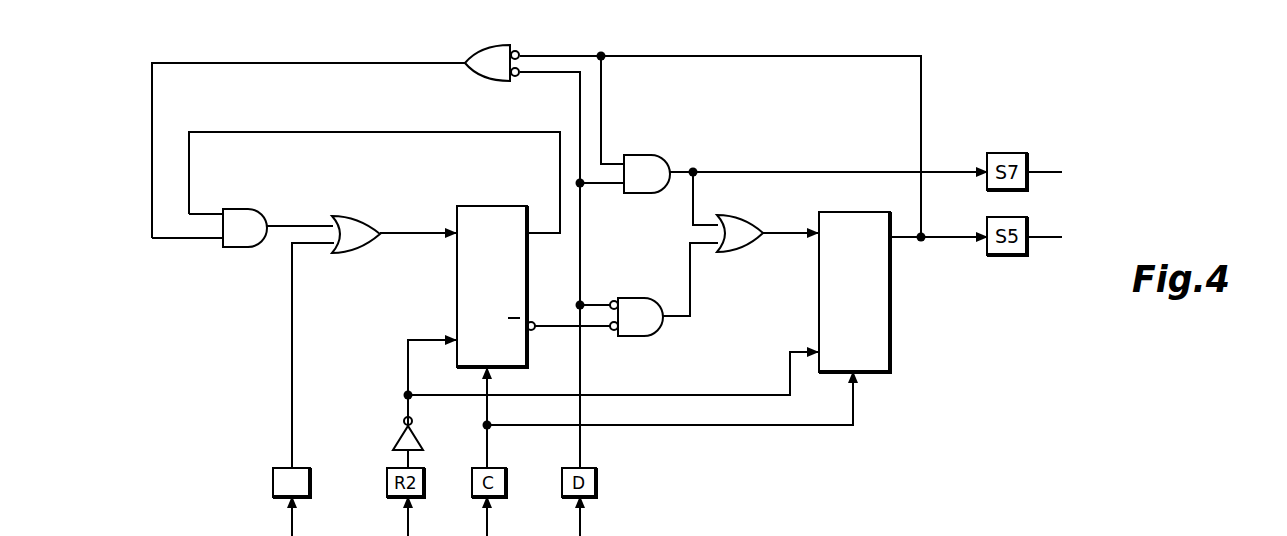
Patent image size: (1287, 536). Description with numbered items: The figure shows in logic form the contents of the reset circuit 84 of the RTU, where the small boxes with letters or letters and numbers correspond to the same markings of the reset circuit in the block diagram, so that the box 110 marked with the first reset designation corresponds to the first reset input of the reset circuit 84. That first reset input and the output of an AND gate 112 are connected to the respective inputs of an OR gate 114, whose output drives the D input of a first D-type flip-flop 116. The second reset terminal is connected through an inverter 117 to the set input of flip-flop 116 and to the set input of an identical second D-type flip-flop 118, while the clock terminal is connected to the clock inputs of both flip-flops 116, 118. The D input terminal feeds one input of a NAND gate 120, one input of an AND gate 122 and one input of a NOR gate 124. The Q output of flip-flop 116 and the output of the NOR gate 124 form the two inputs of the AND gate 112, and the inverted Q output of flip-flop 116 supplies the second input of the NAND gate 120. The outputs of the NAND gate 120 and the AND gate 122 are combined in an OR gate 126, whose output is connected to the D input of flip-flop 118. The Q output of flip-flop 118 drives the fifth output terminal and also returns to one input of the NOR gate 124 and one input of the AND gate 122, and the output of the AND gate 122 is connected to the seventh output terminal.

The reset circuit 84 is at (785, 53).
The box marked R1 110 is at (273, 489).
The AND gate 112 is at (240, 208).
The OR gate 114 is at (352, 213).
The D-type flip-flop 116 is at (457, 272).
The inverter 117 is at (396, 438).
The D-type flip-flop 118 is at (819, 290).
The NAND gate 120 is at (640, 300).
The AND gate 122 is at (652, 194).
The NOR gate 124 is at (490, 80).
The OR gate 126 is at (748, 224).